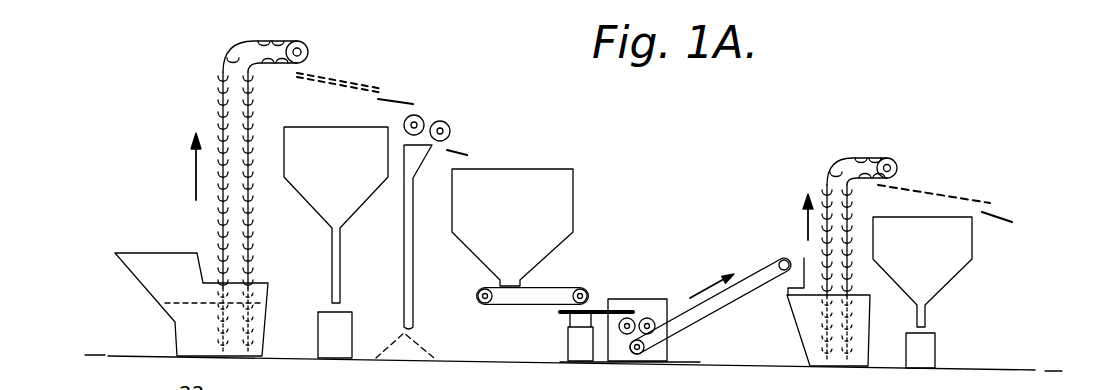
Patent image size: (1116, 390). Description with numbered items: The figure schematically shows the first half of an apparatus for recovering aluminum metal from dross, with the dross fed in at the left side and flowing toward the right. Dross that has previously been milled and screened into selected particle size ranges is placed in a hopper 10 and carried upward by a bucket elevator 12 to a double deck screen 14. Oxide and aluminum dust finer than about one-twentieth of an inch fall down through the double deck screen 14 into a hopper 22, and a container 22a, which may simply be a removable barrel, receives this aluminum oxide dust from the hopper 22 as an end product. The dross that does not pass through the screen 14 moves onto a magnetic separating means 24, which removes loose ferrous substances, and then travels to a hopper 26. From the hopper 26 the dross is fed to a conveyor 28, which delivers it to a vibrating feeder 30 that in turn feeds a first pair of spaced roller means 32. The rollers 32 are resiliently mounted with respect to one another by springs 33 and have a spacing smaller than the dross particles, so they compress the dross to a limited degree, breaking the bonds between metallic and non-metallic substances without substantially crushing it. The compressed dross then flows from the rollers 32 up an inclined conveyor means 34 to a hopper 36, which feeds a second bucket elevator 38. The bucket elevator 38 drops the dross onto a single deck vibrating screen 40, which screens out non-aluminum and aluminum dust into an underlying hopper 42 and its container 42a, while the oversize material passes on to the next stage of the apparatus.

The hopper 10 is at (132, 253).
The bucket elevator 12 is at (241, 52).
The double deck screen 14 is at (356, 82).
The hopper 22 is at (320, 210).
The container 22a is at (318, 338).
The magnetic separating means 24 is at (438, 119).
The hopper 26 is at (552, 172).
The conveyor 28 is at (556, 288).
The vibrating feeder 30 is at (594, 310).
The roller means 32 is at (637, 318).
The springs 33 is at (622, 362).
The inclined conveyor means 34 is at (762, 262).
The hopper 36 is at (797, 330).
The bucket elevator 38 is at (838, 160).
The single deck vibrating screen 40 is at (962, 198).
The hopper 42 is at (947, 276).
The container 42a is at (928, 345).